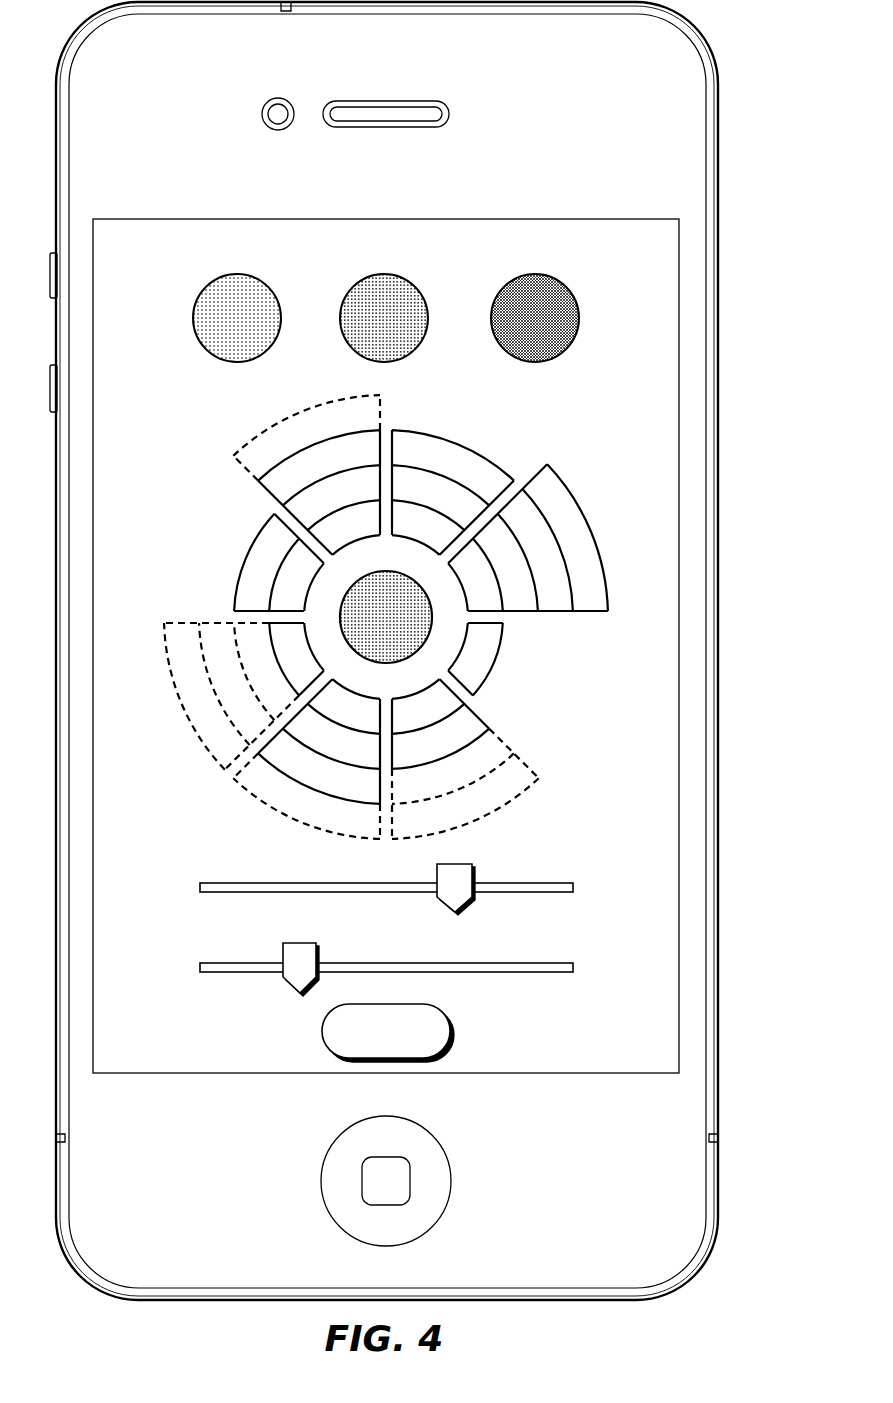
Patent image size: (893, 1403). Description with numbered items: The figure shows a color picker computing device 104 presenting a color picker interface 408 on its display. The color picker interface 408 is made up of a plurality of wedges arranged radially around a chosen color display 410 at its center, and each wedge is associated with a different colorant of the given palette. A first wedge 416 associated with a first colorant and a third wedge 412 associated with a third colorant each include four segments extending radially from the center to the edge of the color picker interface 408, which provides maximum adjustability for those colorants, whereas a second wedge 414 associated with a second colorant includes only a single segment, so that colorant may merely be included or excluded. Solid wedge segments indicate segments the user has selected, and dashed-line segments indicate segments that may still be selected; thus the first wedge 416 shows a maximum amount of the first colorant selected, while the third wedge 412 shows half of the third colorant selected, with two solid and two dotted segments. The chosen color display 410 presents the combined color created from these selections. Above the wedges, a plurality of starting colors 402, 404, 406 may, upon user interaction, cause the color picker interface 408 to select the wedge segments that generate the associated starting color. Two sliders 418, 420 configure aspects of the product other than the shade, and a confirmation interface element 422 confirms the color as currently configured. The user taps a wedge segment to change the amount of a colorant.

The color picker computing device 104 is at (691, 1272).
The starting color 402 is at (204, 258).
The starting color 404 is at (353, 258).
The starting color 406 is at (557, 260).
The color picker interface 408 is at (404, 604).
The chosen color display 410 is at (340, 603).
The third wedge 412 is at (503, 809).
The second wedge 414 is at (498, 662).
The first wedge 416 is at (578, 503).
The slider 418 is at (568, 892).
The slider 420 is at (543, 973).
The confirmation interface element 422 is at (323, 1052).